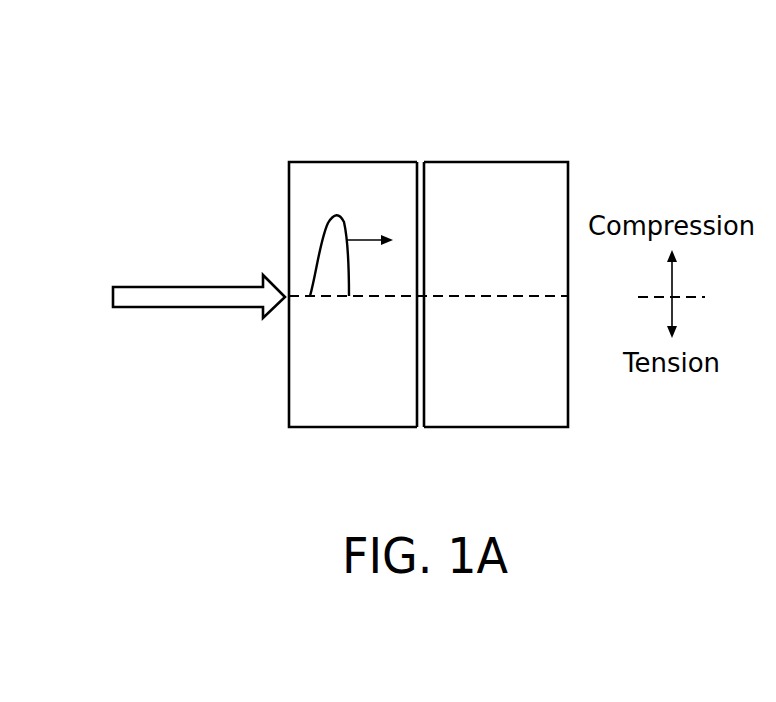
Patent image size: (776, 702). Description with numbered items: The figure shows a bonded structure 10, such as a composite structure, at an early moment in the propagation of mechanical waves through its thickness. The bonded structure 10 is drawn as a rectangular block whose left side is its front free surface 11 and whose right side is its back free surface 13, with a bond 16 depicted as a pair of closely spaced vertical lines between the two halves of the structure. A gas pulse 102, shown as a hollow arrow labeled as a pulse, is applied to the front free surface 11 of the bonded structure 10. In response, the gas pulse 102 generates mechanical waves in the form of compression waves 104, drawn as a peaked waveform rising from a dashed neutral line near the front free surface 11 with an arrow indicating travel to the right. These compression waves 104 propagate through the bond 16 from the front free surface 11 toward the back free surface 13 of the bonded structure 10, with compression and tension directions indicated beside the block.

The bonded structure 10 is at (432, 275).
The front free surface 11 is at (289, 382).
The back free surface 13 is at (568, 403).
The bond 16 is at (422, 428).
The gas pulse 102 is at (220, 308).
The compression waves 104 is at (321, 241).